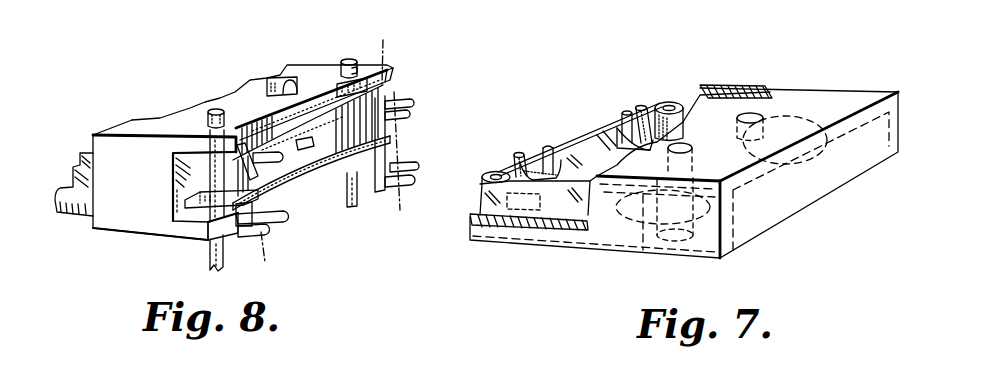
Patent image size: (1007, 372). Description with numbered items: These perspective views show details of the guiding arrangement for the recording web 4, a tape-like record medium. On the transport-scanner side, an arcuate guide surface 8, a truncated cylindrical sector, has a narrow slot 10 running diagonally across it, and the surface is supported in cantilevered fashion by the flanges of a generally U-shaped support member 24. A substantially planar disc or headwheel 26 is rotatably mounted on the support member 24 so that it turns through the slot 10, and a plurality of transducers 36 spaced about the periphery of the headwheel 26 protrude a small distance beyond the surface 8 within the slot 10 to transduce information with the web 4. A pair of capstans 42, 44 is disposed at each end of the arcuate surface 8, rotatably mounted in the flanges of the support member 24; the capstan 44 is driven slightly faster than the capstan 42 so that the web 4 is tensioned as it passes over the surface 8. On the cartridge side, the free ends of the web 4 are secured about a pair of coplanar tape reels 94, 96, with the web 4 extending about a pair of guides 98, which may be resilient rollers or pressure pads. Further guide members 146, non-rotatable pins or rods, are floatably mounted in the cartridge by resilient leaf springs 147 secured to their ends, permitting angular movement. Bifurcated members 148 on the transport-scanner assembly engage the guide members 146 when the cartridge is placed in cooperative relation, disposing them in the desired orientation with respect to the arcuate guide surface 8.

In FIG. 7, the web like record medium 4 is at (583, 150).
In FIG. 8, the arcuate guide surface 8 is at (376, 183).
In FIG. 8, the narrow slot 10 is at (350, 140).
In FIG. 8, the U-shaped support member 24 is at (115, 153).
In FIG. 8, the disc or headwheel 26 is at (190, 108).
In FIG. 8, the transducers 36 is at (300, 188).
In FIG. 8, the capstan 42 is at (216, 108).
In FIG. 8, the capstan 44 is at (352, 68).
In FIG. 7, the web or tape reel 94 is at (642, 257).
In FIG. 7, the web or tape reel 96 is at (733, 192).
In FIG. 7, the guides 98 is at (492, 176).
In FIG. 7, the guide members 146 is at (513, 157).
In FIG. 7, the resilient leaf springs 147 is at (557, 150).
In FIG. 8, the bifurcated members 148 is at (398, 147).